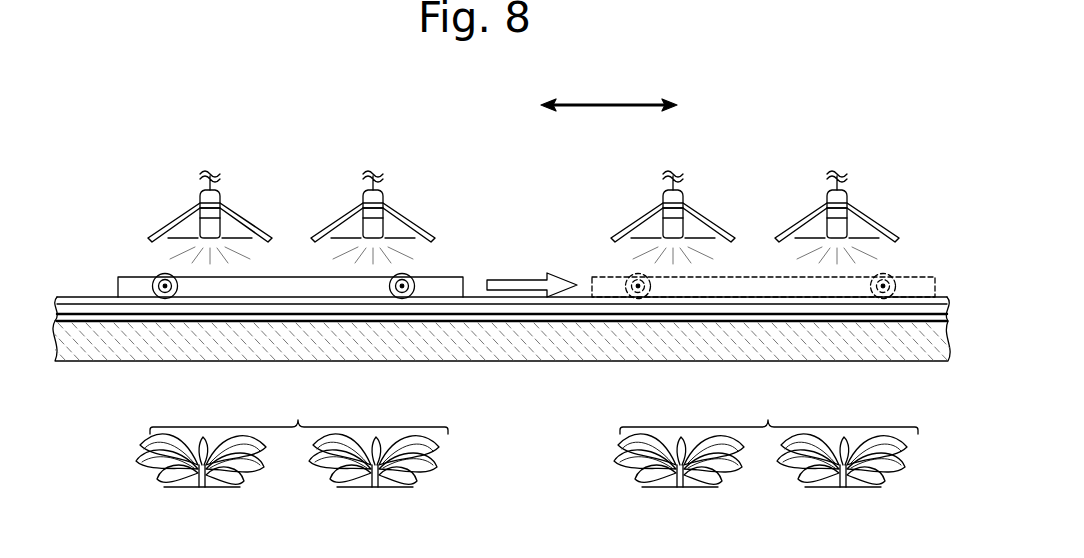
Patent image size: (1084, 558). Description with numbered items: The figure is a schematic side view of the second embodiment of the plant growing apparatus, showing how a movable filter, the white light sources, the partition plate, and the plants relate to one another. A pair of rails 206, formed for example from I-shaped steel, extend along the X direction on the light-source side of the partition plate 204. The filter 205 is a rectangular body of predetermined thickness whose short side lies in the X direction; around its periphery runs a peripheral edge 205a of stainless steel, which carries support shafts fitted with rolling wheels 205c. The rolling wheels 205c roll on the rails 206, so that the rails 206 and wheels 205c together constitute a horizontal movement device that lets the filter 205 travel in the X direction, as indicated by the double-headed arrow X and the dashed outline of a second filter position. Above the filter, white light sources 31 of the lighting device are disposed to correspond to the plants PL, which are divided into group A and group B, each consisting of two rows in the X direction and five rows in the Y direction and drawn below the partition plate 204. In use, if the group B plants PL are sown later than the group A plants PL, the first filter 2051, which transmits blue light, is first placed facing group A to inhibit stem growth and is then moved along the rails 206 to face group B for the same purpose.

The partition plate 204 is at (758, 340).
The rails 206 is at (147, 310).
The filter 205 is at (515, 212).
The first filter 2051 is at (515, 212).
The peripheral edge 205a is at (433, 283).
The rolling wheels 205c is at (158, 275).
The white light sources 31 is at (287, 278).
The plants to be grown PL is at (622, 457).
The group A is at (299, 412).
The group B is at (769, 412).
The X direction X is at (609, 106).